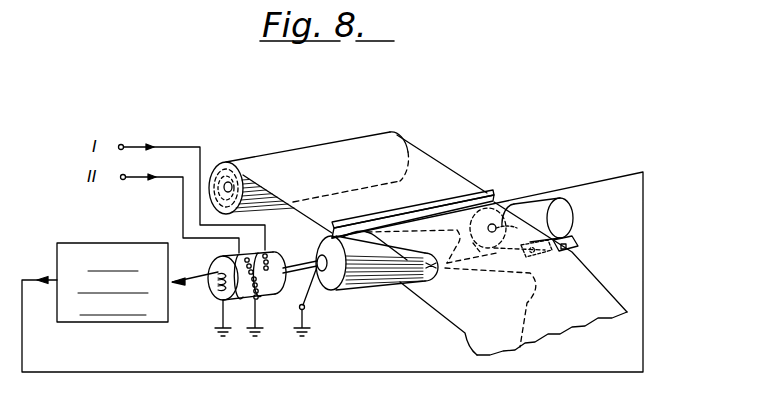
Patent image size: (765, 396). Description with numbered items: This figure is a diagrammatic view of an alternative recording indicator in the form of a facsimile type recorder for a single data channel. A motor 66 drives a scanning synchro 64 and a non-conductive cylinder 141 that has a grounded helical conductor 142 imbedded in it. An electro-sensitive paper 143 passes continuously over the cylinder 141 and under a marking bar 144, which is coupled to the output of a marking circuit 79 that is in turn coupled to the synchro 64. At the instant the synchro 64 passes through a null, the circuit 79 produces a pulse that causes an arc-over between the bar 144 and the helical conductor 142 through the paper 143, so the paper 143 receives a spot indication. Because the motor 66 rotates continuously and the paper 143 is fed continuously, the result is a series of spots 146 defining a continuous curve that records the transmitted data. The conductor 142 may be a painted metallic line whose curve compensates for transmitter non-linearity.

The scanning synchro 64 is at (207, 292).
The motor 66 is at (567, 202).
The marking circuit 79 is at (128, 323).
The non-conductive cylinder 141 is at (340, 288).
The helical conductor 142 is at (401, 258).
The electro-sensitive paper 143 is at (427, 153).
The marking bar 144 is at (490, 192).
The spots 146 is at (541, 297).